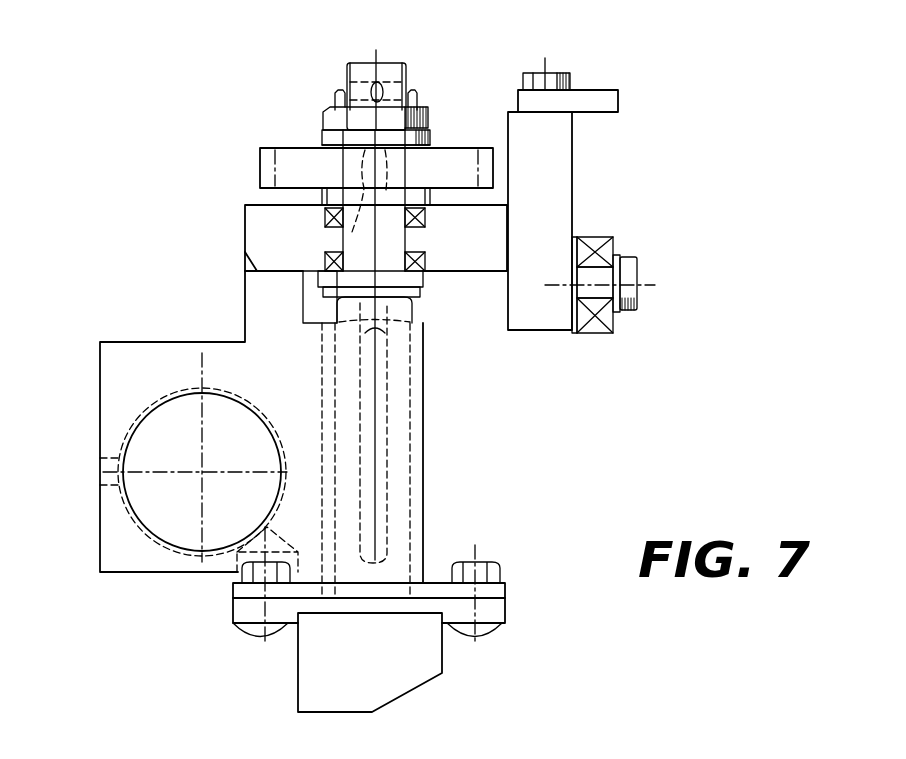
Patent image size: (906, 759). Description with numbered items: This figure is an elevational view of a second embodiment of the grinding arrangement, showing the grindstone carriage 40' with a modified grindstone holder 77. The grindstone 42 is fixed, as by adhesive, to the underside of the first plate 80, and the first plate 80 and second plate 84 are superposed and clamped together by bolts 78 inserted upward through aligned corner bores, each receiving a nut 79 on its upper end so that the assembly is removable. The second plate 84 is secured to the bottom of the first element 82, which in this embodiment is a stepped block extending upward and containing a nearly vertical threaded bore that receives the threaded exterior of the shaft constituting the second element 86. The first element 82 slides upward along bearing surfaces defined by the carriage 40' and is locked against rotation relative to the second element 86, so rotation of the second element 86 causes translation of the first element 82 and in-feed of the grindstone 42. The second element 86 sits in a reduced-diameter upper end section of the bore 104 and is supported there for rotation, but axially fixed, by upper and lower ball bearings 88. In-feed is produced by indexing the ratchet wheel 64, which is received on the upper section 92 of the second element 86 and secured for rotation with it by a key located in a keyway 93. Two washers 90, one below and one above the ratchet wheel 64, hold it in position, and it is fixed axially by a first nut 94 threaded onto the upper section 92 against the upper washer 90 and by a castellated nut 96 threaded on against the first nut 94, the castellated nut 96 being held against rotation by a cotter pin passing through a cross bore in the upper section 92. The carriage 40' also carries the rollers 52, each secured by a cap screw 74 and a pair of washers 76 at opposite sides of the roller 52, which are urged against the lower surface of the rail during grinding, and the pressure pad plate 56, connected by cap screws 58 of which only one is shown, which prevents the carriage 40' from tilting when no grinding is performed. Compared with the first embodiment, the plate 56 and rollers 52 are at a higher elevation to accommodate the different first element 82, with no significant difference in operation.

The carriage 40' is at (266, 388).
The grindstone 42 is at (295, 700).
The roller 52 is at (603, 237).
The pressure pad plate 56 is at (620, 102).
The cap screw 58 is at (572, 78).
The ratchet wheel 64 is at (263, 148).
The cap screw 74 is at (640, 267).
The washer 76 is at (620, 309).
The grindstone holder 77 is at (222, 627).
The bolt 78 is at (245, 630).
The nut 79 is at (240, 577).
The first plate 80 is at (505, 605).
The first element 82 is at (418, 403).
The second plate 84 is at (505, 585).
The second element 86 is at (398, 455).
The ball bearing 88 is at (425, 270).
The washer 90 is at (320, 146).
The upper section 92 is at (363, 62).
The keyway 93 is at (345, 238).
The first nut 94 is at (322, 145).
The castellated nut 96 is at (330, 110).
The bore 104 is at (378, 510).